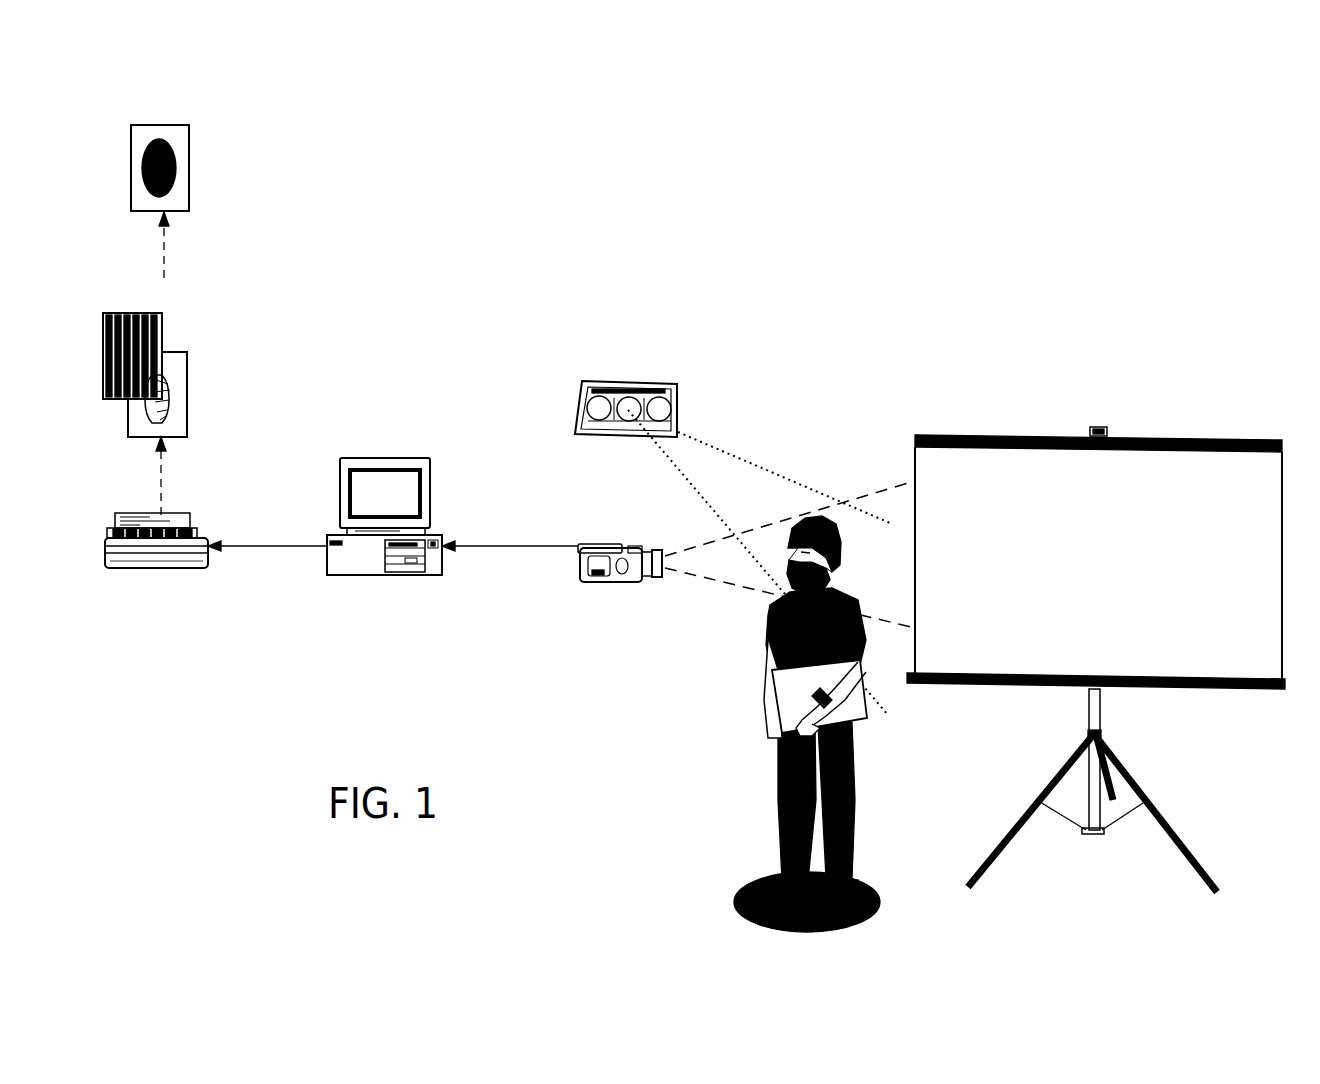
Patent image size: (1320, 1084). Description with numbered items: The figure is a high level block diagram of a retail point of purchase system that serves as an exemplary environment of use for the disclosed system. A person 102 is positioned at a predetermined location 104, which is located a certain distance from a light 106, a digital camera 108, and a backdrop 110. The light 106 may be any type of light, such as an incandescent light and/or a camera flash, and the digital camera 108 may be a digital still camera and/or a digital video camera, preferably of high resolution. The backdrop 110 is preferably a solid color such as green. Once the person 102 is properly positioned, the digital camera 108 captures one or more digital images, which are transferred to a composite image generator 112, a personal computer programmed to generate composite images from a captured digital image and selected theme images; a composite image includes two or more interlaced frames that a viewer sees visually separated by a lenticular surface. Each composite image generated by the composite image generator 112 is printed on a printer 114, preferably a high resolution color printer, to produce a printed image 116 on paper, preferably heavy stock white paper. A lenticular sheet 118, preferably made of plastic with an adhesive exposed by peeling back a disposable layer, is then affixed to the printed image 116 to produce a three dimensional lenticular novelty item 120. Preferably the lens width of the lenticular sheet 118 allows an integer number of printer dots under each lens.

The person 102 is at (838, 711).
The predetermined location 104 is at (846, 889).
The light 106 is at (732, 530).
The digital camera 108 is at (721, 554).
The backdrop 110 is at (1096, 649).
The composite image generator 112 is at (384, 533).
The printer 114 is at (164, 540).
The printed image 116 is at (194, 376).
The lenticular sheet 118 is at (165, 338).
The lenticular novelty item 120 is at (193, 151).